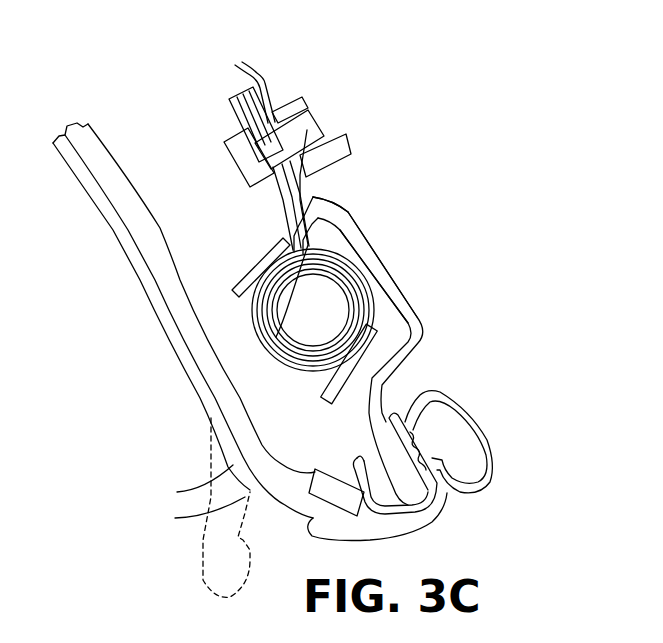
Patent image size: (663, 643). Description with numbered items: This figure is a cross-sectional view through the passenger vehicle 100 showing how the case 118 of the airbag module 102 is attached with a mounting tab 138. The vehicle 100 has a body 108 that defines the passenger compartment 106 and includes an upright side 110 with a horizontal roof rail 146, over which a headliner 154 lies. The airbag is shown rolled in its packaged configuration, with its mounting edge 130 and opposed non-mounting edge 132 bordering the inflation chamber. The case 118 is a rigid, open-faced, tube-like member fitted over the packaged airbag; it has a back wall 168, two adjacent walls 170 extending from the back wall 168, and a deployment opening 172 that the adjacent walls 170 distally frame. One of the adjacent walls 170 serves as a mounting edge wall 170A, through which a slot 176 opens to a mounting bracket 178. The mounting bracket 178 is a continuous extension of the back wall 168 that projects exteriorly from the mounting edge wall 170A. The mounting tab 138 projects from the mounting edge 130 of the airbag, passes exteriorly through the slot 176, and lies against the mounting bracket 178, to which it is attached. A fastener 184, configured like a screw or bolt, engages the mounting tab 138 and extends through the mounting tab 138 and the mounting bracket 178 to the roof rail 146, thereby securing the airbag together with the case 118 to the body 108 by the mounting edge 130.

The passenger vehicle 100 is at (210, 416).
The passenger compartment 106 is at (151, 316).
The body 108 is at (185, 485).
The side 110 is at (191, 514).
The headliner 154 is at (237, 537).
The deployment opening 172 is at (248, 348).
The adjacent walls 170 is at (417, 348).
The mounting edge wall 170A is at (268, 258).
The case 118 is at (370, 271).
The back wall 168 is at (375, 286).
The non-mounting edge 132 is at (337, 223).
The airbag module 102 is at (353, 214).
The slot 176 is at (326, 204).
The fastener 184 is at (282, 112).
The mounting tab 138 is at (320, 126).
The mounting edge 130 is at (330, 153).
The roof rail 146 is at (272, 97).
The mounting bracket 178 is at (307, 130).